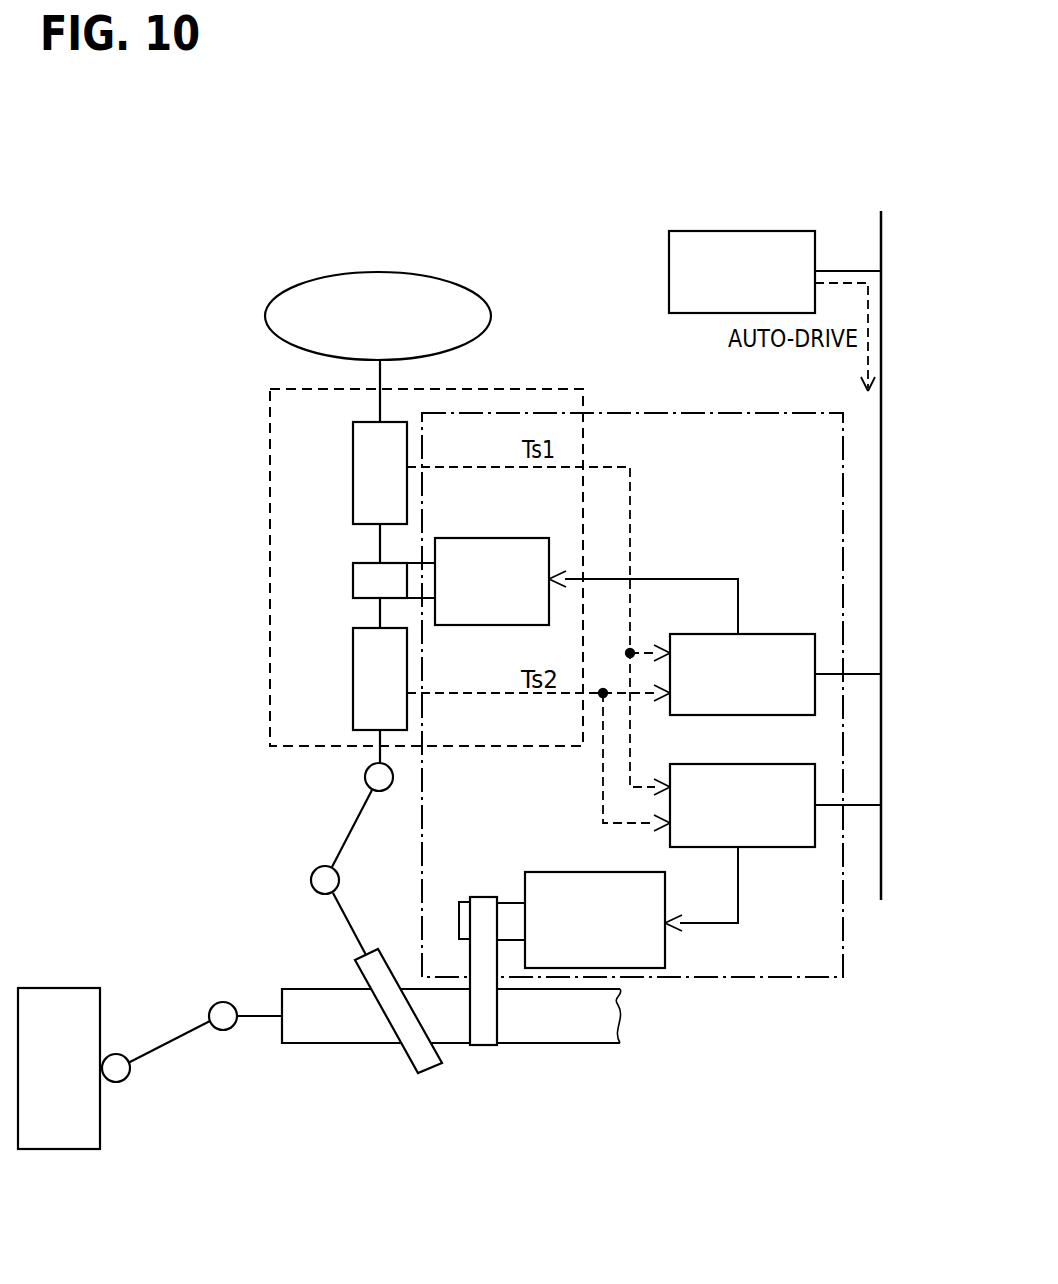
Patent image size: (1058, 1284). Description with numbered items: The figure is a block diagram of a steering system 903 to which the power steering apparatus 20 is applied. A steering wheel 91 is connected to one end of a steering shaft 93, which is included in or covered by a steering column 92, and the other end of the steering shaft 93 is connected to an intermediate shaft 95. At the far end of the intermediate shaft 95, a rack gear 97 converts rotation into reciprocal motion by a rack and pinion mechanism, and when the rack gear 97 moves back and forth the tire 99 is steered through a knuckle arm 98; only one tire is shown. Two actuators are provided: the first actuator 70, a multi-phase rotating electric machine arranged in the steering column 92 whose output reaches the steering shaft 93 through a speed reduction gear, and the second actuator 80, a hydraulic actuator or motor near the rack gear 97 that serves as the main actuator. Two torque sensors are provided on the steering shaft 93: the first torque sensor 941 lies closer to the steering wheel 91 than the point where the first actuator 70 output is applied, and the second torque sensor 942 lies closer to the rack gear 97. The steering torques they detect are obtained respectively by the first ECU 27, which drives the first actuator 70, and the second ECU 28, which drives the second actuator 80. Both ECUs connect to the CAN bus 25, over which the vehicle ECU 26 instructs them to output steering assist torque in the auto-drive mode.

The steering wheel 91 is at (265, 314).
The steering column 92 is at (270, 508).
The steering shaft 93 is at (380, 548).
The first torque sensor 941 is at (353, 468).
The second torque sensor 942 is at (353, 682).
The power steering apparatus 20 is at (624, 411).
The first actuator 70 is at (505, 538).
The second actuator 80 is at (566, 872).
The vehicle ECU 26 is at (757, 231).
The CAN bus 25 is at (881, 503).
The first ECU 27 is at (792, 634).
The second ECU 28 is at (794, 847).
The intermediate shaft 95 is at (348, 820).
The rack gear 97 is at (300, 1045).
The knuckle arm 98 is at (163, 1042).
The tire 99 is at (60, 988).
The steering system 903 is at (213, 832).